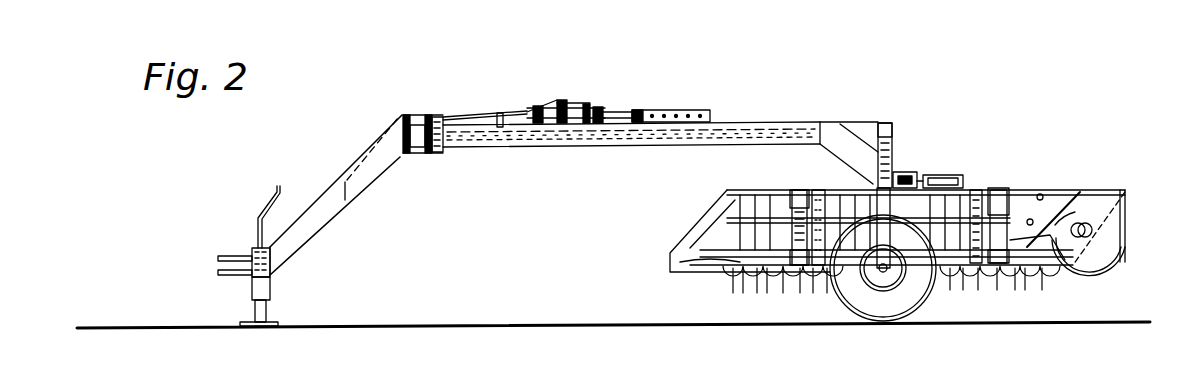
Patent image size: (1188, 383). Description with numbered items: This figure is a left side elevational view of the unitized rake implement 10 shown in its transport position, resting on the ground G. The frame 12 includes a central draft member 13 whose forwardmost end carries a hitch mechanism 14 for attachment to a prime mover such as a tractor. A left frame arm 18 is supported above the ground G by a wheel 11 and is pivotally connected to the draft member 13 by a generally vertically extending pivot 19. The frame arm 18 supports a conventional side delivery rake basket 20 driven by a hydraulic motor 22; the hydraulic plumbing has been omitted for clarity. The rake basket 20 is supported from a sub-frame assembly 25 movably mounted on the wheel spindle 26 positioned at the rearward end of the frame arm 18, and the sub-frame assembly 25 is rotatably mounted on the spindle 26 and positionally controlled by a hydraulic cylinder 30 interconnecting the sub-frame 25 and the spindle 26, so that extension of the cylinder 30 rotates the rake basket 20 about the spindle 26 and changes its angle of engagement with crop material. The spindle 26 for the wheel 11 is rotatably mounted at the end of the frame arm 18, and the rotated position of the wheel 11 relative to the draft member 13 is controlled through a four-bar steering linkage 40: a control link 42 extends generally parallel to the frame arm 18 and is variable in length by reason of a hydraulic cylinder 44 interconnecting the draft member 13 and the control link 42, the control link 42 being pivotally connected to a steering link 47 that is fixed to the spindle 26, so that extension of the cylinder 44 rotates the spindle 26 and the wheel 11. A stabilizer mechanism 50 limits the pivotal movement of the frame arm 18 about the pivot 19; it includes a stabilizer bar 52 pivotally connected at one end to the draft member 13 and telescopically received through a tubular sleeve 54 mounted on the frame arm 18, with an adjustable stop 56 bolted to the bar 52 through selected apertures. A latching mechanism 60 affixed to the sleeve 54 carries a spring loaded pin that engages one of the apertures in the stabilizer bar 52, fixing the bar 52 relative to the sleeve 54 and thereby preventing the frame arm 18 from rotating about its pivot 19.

The unitized rake implement 10 is at (877, 57).
The wheel 11 is at (850, 293).
The frame 12 is at (345, 150).
The central draft member 13 is at (353, 187).
The hitch mechanism 14 is at (232, 255).
The left frame arm 18 is at (553, 143).
The pivot 19 is at (440, 153).
The side delivery rake basket 20 is at (1097, 278).
The hydraulic motor 22 is at (1092, 230).
The sub-frame assembly 25 is at (982, 193).
The wheel spindle 26 is at (895, 165).
The hydraulic cylinder 30 is at (943, 175).
The steering linkage 40 is at (918, 89).
The control link 42 is at (876, 124).
The hydraulic cylinder 44 is at (477, 150).
The steering link 47 is at (892, 128).
The stabilizer mechanism 50 is at (660, 78).
The stabilizer bar 52 is at (707, 111).
The tubular sleeve 54 is at (602, 110).
The adjustable stop 56 is at (647, 111).
The latching mechanism 60 is at (563, 102).
The ground G is at (470, 322).